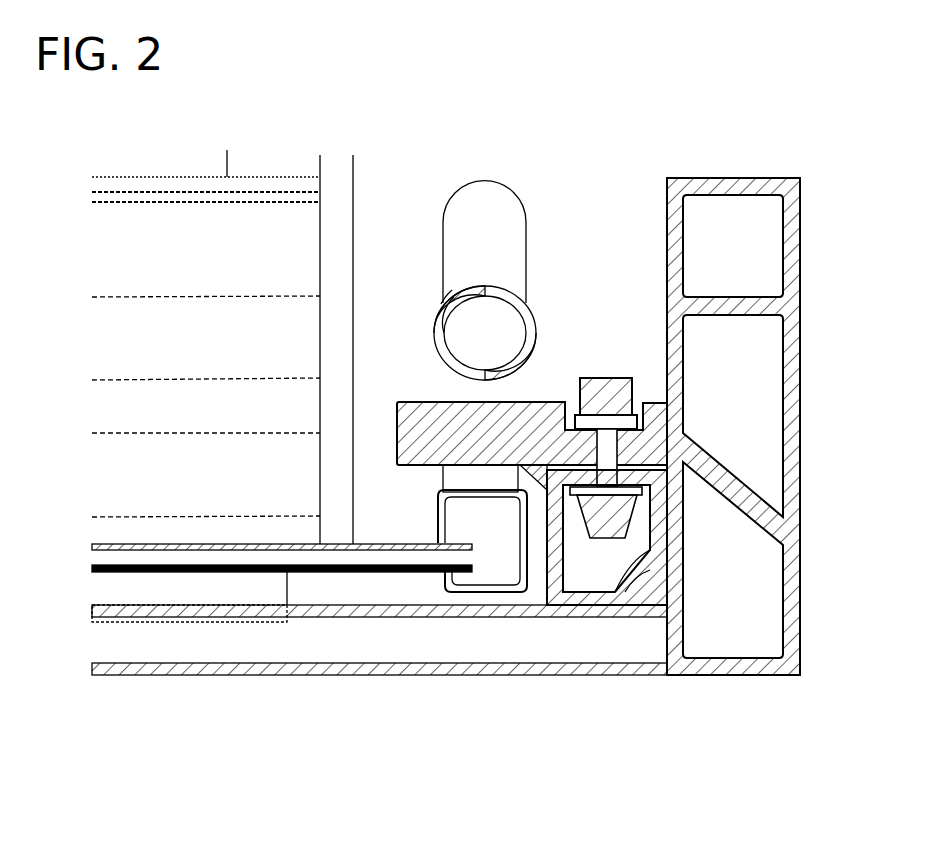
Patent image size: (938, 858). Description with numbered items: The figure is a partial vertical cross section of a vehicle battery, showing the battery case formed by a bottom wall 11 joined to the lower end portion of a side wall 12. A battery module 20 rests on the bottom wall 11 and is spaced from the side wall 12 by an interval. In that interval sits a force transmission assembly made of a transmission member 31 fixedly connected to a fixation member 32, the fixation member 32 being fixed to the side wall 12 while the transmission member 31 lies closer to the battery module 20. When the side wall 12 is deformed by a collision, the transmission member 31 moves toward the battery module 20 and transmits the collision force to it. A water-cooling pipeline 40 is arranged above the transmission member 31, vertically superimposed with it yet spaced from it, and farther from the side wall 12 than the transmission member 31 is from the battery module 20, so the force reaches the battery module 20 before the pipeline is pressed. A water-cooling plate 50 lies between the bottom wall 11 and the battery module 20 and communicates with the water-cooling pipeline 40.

The battery module 20 is at (248, 218).
The water-cooling pipeline 40 is at (488, 245).
The transmission member 31 is at (535, 435).
The fixation member 32 is at (581, 597).
The water-cooling plate 50 is at (406, 557).
The bottom wall 11 is at (473, 675).
The side wall 12 is at (745, 673).